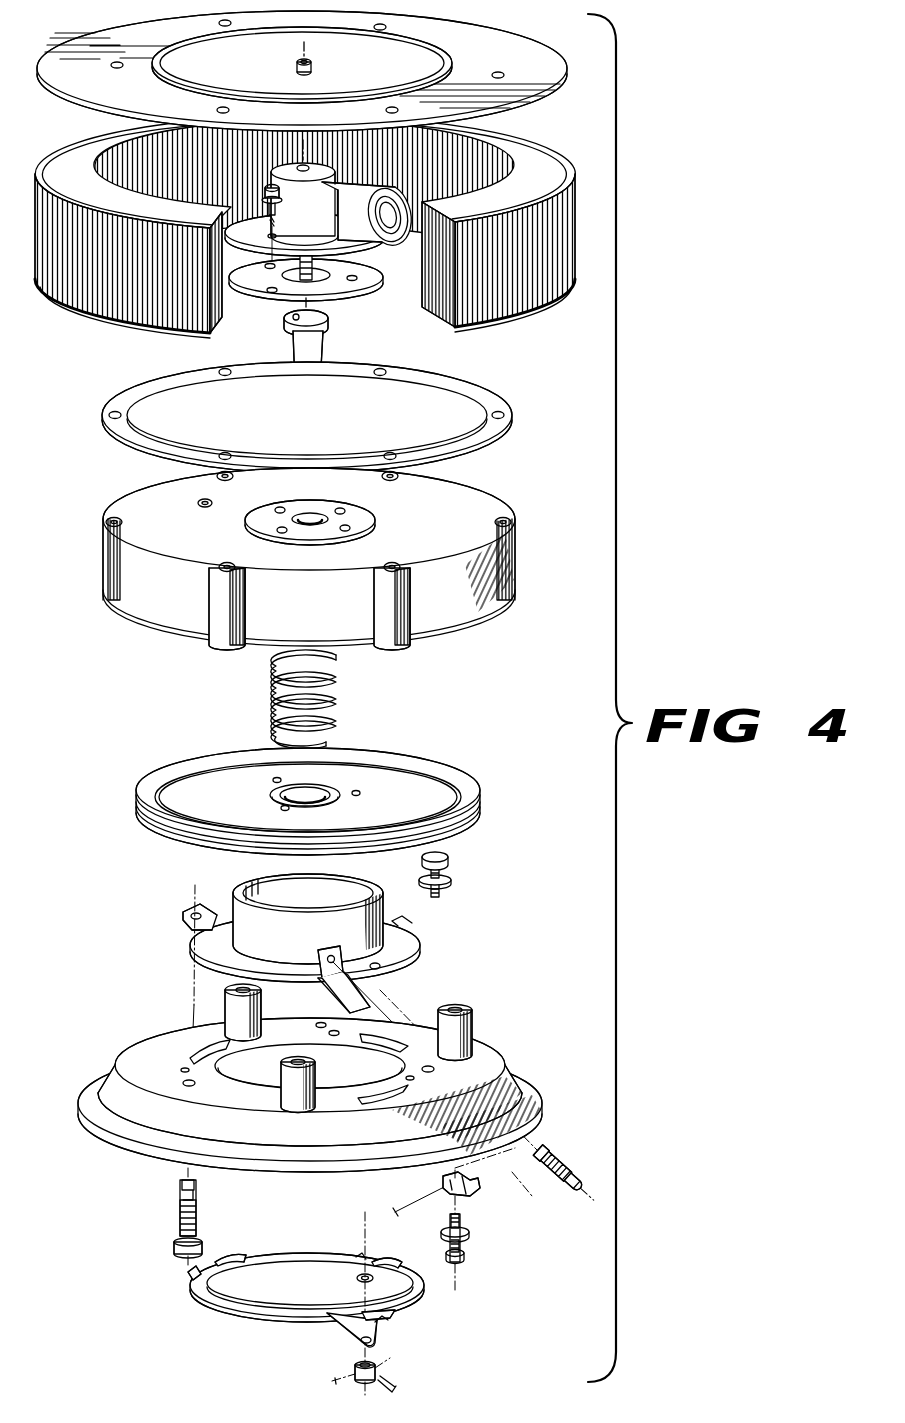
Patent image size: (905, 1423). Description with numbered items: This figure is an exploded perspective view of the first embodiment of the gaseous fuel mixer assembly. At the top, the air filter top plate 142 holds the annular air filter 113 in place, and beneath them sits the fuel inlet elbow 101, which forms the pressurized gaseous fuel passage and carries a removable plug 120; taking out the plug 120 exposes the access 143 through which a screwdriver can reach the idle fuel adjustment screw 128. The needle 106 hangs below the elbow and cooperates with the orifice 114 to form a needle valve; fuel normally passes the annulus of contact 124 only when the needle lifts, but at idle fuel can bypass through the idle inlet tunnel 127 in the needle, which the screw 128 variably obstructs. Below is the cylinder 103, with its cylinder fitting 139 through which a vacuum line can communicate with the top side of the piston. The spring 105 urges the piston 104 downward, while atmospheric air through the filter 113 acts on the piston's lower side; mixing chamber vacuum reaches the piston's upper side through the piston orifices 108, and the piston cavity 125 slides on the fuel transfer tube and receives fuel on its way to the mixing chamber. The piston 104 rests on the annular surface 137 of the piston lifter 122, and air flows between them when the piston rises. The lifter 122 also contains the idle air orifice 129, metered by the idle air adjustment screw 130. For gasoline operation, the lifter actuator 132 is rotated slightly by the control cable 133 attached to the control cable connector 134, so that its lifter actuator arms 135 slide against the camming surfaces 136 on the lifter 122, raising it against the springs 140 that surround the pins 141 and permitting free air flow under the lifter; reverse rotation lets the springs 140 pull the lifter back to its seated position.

The fuel inlet elbow 101 is at (364, 208).
The cylinder 103 is at (506, 540).
The piston 104 is at (470, 797).
The spring 105 is at (338, 684).
The needle 106 is at (323, 318).
The piston orifices 108 is at (360, 792).
The air filter 113 is at (528, 136).
The orifice 114 is at (311, 518).
The plug 120 is at (313, 67).
The piston lifter 122 is at (416, 938).
The annulus of contact 124 is at (324, 516).
The piston cavity 125 is at (322, 789).
The idle inlet tunnel 127 is at (292, 326).
The idle fuel adjustment screw 128 is at (318, 263).
The idle air orifice 129 is at (314, 950).
The idle air adjustment screw 130 is at (546, 1150).
The lifter actuator 132 is at (250, 1312).
The control cable 133 is at (509, 1182).
The control cable connector 134 is at (470, 1194).
The lifter actuator arms 135 is at (224, 1262).
The camming surfaces 136 is at (358, 1256).
The annular surface 137 is at (362, 886).
The cylinder fitting 139 is at (203, 506).
The springs 140 is at (180, 1192).
The pins 141 is at (174, 1247).
The air filter top plate 142 is at (495, 36).
The access 143 is at (303, 165).